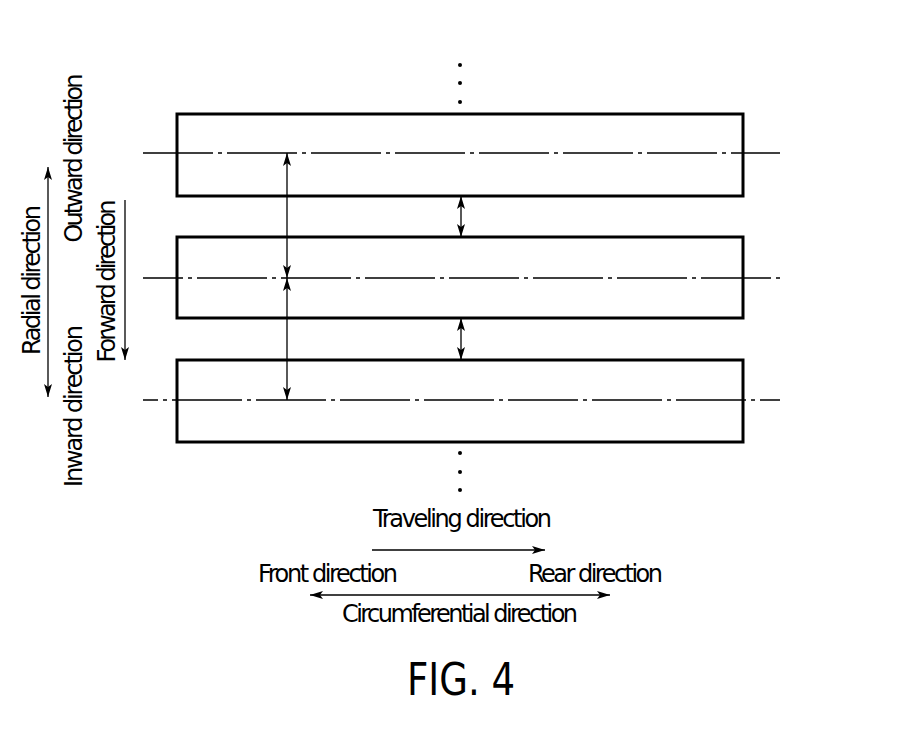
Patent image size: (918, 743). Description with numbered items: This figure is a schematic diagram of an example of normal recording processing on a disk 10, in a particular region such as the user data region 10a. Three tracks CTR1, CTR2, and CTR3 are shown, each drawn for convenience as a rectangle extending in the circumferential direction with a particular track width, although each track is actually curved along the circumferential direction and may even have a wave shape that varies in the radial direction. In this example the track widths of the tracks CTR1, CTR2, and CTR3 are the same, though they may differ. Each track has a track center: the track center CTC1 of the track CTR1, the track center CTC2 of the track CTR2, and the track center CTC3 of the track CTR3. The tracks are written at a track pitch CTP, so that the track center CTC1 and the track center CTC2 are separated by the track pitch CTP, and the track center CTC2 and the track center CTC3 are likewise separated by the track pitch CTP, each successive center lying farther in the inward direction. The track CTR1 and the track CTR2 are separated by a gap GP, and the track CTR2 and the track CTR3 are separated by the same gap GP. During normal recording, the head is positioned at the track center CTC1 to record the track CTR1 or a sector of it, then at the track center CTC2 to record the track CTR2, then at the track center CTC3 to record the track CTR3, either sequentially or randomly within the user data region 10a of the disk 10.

The disk 10 is at (702, 48).
The user data region 10a is at (728, 86).
The track CTR1 is at (741, 128).
The track CTR2 is at (741, 258).
The track CTR3 is at (741, 376).
The track center CTC1 is at (639, 152).
The track center CTC2 is at (640, 277).
The track center CTC3 is at (640, 401).
The track pitch CTP is at (287, 219).
The gap GP is at (463, 215).